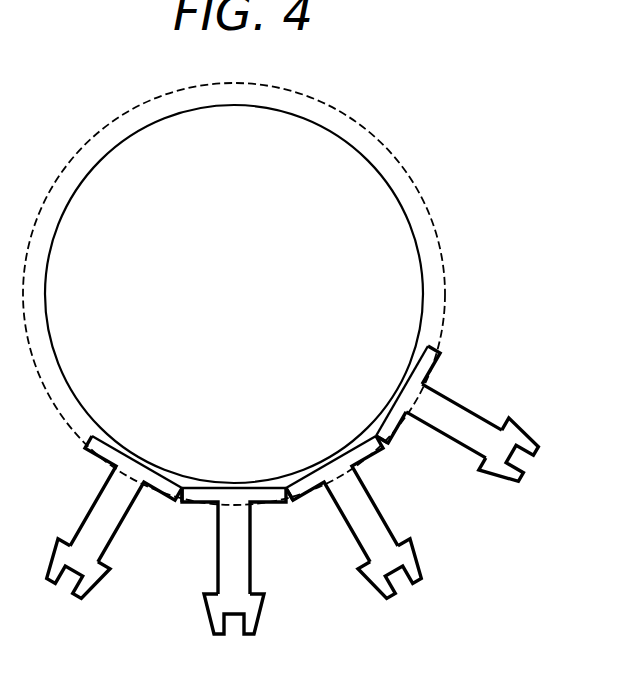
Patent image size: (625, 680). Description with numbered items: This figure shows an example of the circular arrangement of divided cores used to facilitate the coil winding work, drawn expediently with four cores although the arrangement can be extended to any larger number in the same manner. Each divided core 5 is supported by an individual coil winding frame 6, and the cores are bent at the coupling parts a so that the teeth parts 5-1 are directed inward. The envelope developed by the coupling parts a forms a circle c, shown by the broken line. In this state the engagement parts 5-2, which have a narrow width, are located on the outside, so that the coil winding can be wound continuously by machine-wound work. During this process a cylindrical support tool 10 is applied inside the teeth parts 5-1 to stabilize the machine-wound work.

The cylindrical support tool 10 is at (395, 192).
The circle c is at (437, 247).
The divided core 5 is at (458, 428).
The teeth part 5-1 is at (403, 393).
The coil winding frame 6 is at (455, 402).
The engagement part 5-2 is at (518, 480).
The coupling part a is at (385, 446).